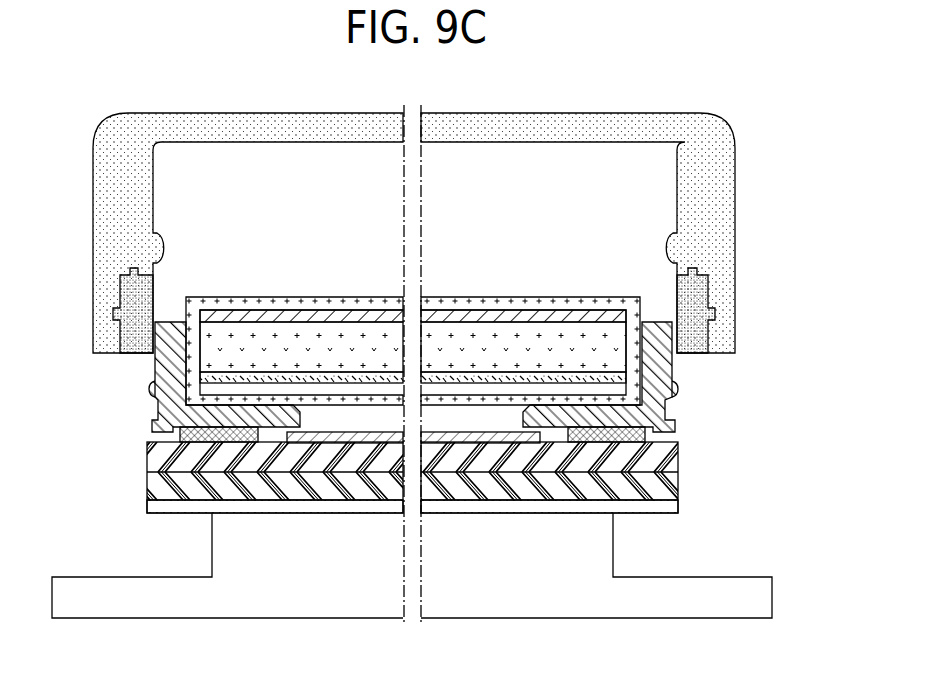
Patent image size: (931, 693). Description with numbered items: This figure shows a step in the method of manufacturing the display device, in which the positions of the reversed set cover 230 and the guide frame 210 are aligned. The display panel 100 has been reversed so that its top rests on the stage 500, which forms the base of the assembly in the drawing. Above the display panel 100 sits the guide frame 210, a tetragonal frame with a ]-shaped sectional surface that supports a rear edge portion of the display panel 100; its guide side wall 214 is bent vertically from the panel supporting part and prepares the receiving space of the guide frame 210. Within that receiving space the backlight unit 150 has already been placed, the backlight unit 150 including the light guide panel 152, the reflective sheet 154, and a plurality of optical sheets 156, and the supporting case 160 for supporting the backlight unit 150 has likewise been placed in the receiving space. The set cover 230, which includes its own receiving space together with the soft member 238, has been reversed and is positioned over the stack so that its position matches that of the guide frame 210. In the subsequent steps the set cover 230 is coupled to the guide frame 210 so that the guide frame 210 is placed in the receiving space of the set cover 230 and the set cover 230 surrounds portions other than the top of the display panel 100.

The display panel 100 is at (690, 473).
The backlight unit 150 is at (413, 296).
The light guide panel 152 is at (285, 348).
The reflective sheet 154 is at (330, 318).
The optical sheets 156 is at (241, 396).
The supporting case 160 is at (390, 303).
The guide frame 210 is at (492, 382).
The guide side wall 214 is at (660, 370).
The set cover 230 is at (746, 133).
The soft member 238 is at (698, 298).
The stage 500 is at (707, 577).